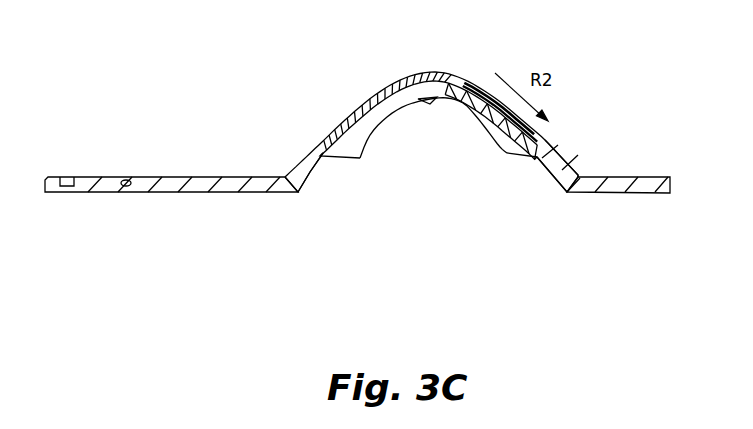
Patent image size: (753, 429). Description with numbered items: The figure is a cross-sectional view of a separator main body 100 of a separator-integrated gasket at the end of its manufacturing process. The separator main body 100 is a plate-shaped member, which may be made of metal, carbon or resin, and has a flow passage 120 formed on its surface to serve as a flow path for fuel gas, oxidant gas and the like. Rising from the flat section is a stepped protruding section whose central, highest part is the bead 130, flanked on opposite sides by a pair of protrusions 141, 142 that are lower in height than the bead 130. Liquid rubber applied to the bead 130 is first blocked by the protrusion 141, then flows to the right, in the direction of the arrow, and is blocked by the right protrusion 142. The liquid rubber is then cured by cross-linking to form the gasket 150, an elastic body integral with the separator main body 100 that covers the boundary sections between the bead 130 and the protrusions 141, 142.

The separator main body 100 is at (232, 163).
The flow passage 120 is at (130, 190).
The bead 130 is at (438, 93).
The protrusion 141 is at (312, 153).
The protrusion 142 is at (550, 172).
The gasket 150 is at (355, 112).